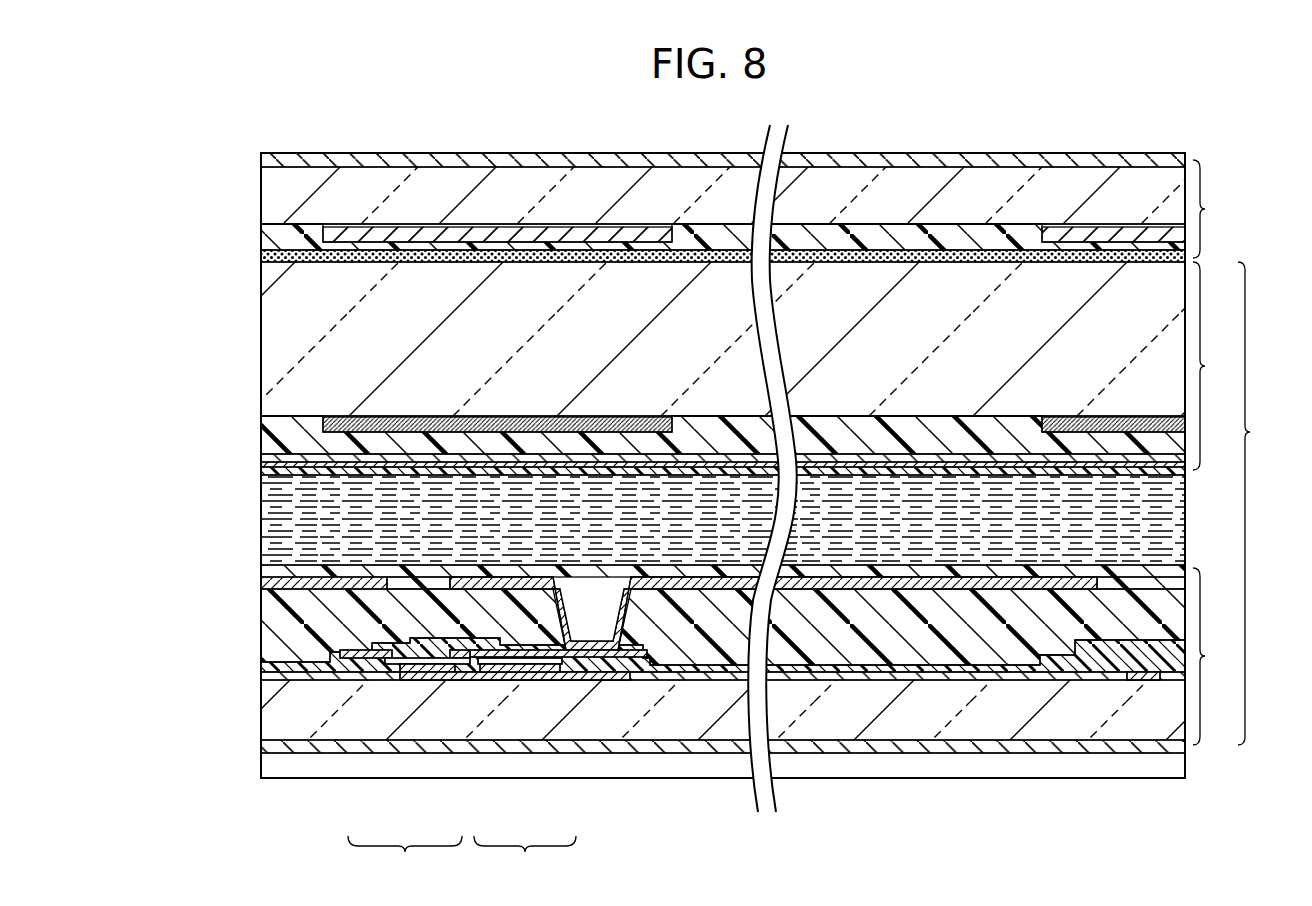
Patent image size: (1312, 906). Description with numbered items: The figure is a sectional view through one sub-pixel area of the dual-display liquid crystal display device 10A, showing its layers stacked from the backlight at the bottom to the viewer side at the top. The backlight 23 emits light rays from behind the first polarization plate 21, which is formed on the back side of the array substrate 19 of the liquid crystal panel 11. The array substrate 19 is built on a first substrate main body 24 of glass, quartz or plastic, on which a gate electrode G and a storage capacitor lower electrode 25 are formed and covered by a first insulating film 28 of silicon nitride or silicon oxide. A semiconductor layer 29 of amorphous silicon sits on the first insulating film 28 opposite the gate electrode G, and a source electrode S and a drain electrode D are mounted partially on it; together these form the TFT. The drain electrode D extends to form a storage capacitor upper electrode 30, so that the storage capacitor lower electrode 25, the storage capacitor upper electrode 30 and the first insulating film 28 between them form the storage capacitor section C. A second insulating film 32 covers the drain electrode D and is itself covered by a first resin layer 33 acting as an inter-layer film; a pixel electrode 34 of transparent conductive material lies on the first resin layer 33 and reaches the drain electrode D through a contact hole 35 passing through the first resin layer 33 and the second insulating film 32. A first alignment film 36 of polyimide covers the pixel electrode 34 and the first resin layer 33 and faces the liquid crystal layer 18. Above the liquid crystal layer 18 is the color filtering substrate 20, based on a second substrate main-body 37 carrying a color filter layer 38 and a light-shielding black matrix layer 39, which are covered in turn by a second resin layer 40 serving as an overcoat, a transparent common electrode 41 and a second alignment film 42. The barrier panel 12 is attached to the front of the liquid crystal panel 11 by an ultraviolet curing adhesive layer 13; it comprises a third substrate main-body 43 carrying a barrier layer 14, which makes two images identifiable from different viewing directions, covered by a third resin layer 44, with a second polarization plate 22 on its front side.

The dual-display liquid crystal display device 10A is at (592, 121).
The second polarization plate 22 is at (268, 160).
The third substrate main-body 43 is at (268, 188).
The barrier layer 14 is at (340, 228).
The third resin layer 44 is at (268, 233).
The ultraviolet curing adhesive layer 13 is at (268, 257).
The barrier panel 12 is at (1214, 209).
The second substrate main-body 37 is at (268, 334).
The color filter (CF) layer 38 is at (270, 427).
The black matrix (BM) layer 39 is at (338, 425).
The second resin layer 40 is at (265, 455).
The common electrode 41 is at (265, 461).
The second alignment film 42 is at (265, 472).
The color filtering substrate 20 is at (1214, 366).
The liquid crystal layer 18 is at (265, 522).
The liquid crystal panel 11 is at (1259, 503).
The first alignment film 36 is at (265, 572).
The first resin layer 33 is at (268, 625).
The contact hole 35 is at (625, 622).
The second insulating film 32 is at (268, 667).
The pixel electrode 34 is at (838, 592).
The source electrode S is at (385, 658).
The gate electrode G is at (420, 670).
The semiconductor layer 29 is at (440, 662).
The drain electrode D is at (462, 656).
The storage capacitor lower electrode 25 is at (495, 670).
The storage capacitor upper electrode 30 is at (522, 662).
The first insulating film 28 is at (560, 655).
The element TFT is at (405, 857).
The storage capacitor section C is at (525, 857).
The first substrate main body 24 is at (274, 702).
The first polarization plate 21 is at (272, 746).
The backlight 23 is at (270, 765).
The array substrate 19 is at (1214, 656).